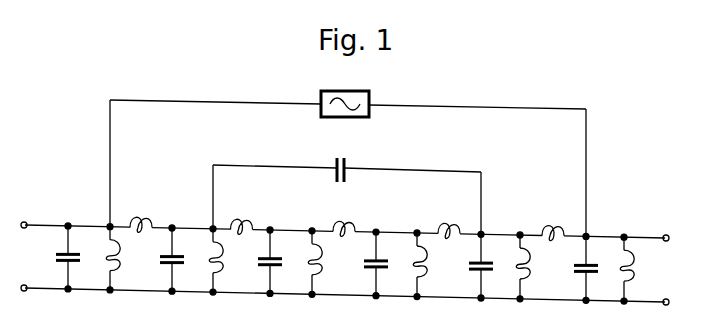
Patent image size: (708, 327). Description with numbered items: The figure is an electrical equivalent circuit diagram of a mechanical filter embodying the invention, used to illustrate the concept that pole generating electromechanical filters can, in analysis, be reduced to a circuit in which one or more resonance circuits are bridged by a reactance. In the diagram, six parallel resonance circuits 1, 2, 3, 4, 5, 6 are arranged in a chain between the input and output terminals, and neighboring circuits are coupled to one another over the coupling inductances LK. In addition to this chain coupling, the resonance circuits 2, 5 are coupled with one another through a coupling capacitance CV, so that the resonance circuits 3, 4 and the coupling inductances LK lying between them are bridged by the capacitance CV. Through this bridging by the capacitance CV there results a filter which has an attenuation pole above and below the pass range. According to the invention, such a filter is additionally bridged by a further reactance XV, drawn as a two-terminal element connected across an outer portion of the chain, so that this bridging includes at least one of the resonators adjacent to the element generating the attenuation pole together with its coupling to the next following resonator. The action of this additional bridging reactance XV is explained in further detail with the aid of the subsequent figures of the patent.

The parallel resonance circuit 1 is at (88, 258).
The parallel resonance circuit 2 is at (191, 260).
The parallel resonance circuit 3 is at (290, 262).
The parallel resonance circuit 4 is at (395, 264).
The parallel resonance circuit 5 is at (499, 266).
The parallel resonance circuit 6 is at (604, 268).
The coupling inductance LK is at (350, 218).
The further reactance XV is at (348, 149).
The coupling capacitance CV is at (347, 182).